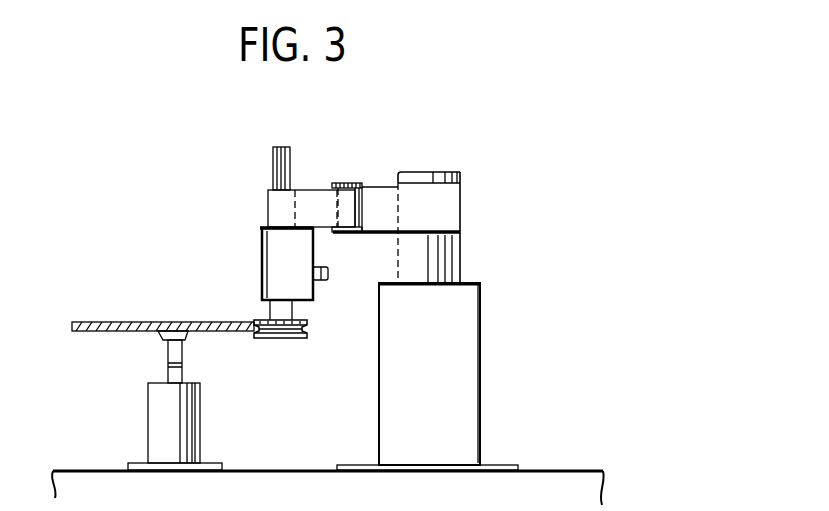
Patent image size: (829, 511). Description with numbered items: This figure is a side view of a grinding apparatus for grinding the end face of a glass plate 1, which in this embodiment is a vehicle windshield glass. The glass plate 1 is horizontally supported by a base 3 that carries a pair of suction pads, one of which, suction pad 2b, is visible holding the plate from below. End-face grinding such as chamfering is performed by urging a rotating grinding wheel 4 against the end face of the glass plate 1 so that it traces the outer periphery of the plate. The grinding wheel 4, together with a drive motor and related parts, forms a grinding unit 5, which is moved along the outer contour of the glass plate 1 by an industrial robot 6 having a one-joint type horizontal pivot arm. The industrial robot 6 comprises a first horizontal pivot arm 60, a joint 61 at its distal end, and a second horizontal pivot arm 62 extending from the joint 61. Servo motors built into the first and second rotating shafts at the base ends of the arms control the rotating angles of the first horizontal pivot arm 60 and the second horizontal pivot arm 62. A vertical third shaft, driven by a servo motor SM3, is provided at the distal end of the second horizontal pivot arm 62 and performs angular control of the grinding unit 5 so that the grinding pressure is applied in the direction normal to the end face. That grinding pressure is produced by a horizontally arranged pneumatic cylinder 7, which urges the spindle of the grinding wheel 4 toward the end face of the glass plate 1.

The glass plate 1 is at (108, 322).
The suction pad 2b is at (162, 334).
The base 3 is at (160, 415).
The grinding wheel 4 is at (280, 338).
The grinding unit 5 is at (252, 269).
The industrial robot 6 is at (464, 166).
The pneumatic cylinder 7 is at (322, 281).
The first horizontal pivot arm 60 is at (387, 218).
The joint 61 is at (345, 238).
The second horizontal pivot arm 62 is at (312, 198).
The servo motor SM3 is at (272, 177).